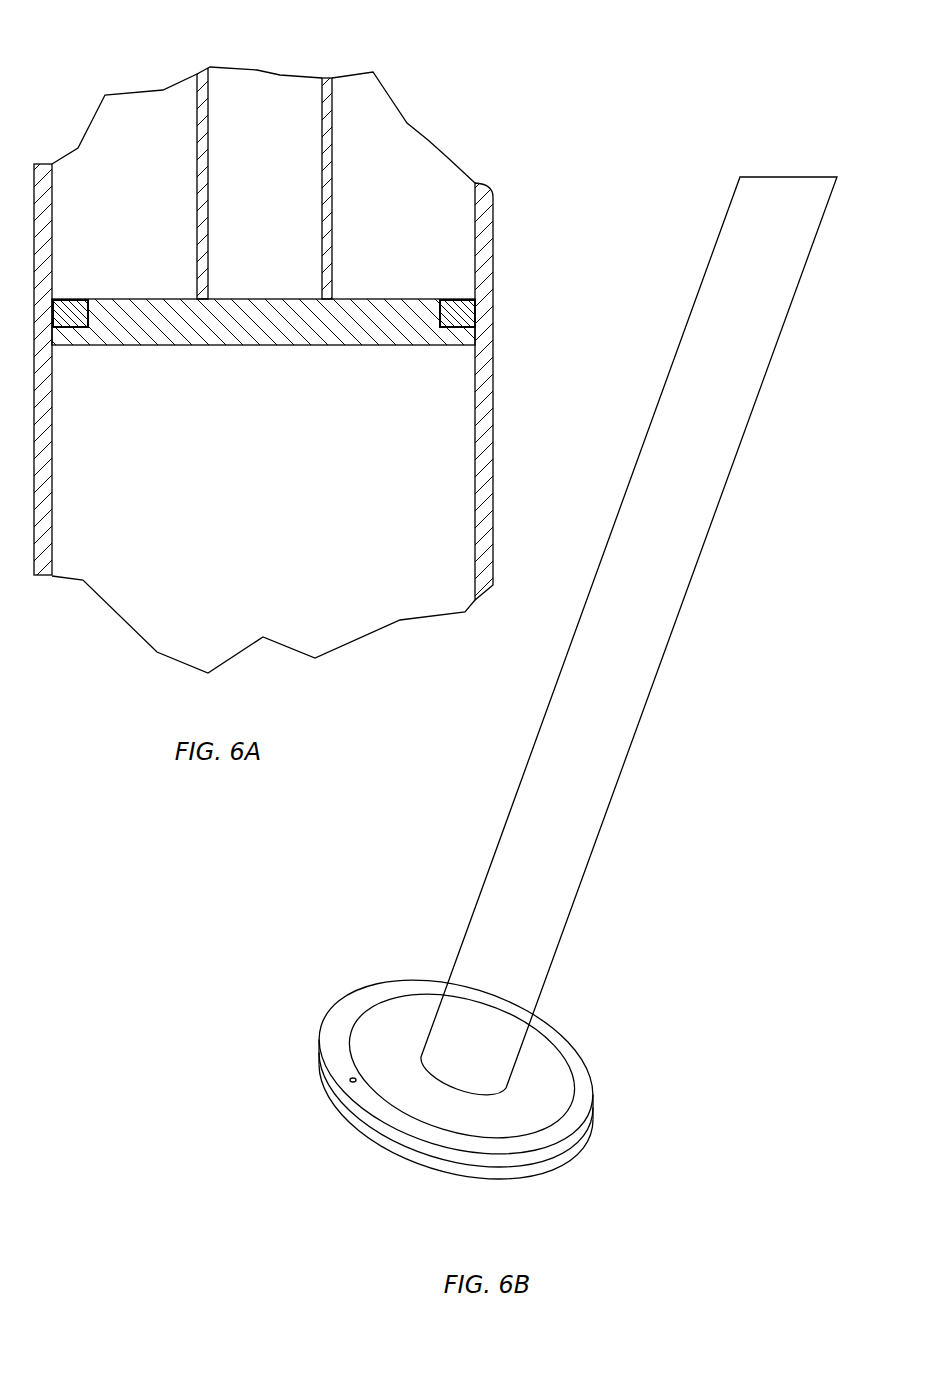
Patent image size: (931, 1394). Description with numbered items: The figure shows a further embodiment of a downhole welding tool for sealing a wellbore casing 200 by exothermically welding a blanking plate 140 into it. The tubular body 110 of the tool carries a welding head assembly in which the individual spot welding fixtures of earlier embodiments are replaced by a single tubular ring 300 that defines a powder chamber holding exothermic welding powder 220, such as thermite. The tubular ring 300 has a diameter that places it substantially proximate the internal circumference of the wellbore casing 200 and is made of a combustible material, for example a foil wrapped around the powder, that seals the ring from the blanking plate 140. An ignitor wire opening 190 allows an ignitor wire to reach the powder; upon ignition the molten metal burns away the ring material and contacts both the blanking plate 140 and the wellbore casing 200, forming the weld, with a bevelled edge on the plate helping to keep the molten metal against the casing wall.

In FIG. 6A, the tubular body 110 is at (339, 146).
In FIG. 6B, the tubular body 110 is at (658, 675).
In FIG. 6A, the blanking plate 140 is at (260, 353).
In FIG. 6B, the blanking plate 140 is at (357, 1138).
In FIG. 6A, the ignitor wire opening 190 is at (69, 297).
In FIG. 6B, the ignitor wire opening 190 is at (347, 1071).
In FIG. 6A, the wellbore casing 200 is at (499, 441).
In FIG. 6A, the exothermic welding powder 220 is at (459, 314).
In FIG. 6A, the tubular ring 300 is at (481, 320).
In FIG. 6B, the tubular ring 300 is at (586, 1046).